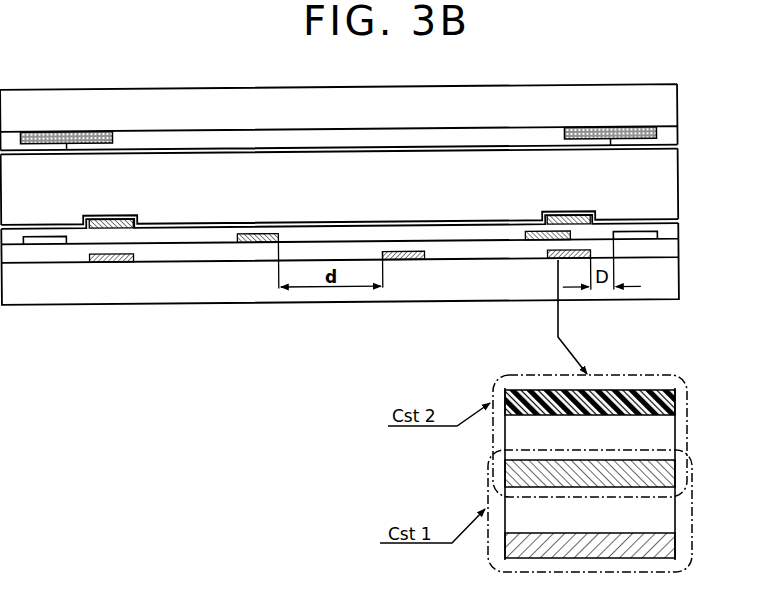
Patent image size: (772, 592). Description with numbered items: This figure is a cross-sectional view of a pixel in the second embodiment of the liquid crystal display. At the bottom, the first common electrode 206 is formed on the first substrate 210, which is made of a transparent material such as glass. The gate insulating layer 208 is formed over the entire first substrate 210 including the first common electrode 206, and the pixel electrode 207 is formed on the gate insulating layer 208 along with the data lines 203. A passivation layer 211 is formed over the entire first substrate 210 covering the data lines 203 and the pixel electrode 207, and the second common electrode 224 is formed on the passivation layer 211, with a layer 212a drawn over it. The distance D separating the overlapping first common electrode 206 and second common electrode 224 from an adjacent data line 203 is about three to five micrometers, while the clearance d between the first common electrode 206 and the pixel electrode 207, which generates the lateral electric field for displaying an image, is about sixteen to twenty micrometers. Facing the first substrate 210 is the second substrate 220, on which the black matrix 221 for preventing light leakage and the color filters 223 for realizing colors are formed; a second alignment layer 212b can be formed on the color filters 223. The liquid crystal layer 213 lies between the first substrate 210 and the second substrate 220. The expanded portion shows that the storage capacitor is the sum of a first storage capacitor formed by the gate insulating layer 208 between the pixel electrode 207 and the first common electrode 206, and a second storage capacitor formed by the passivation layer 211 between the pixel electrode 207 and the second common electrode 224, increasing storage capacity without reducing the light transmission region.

The data lines 203 is at (41, 242).
The first common electrode 206 is at (110, 260).
The pixel electrode 207 is at (257, 242).
The gate insulating layer 208 is at (672, 249).
The first substrate 210 is at (672, 277).
The passivation layer 211 is at (672, 232).
The lower passivation layer 212a is at (680, 221).
The second alignment layer 212b is at (677, 147).
The liquid crystal layer 213 is at (677, 180).
The second substrate 220 is at (673, 102).
The black matrix 221 is at (611, 147).
The color filters 223 is at (672, 137).
The second common electrode 224 is at (127, 227).